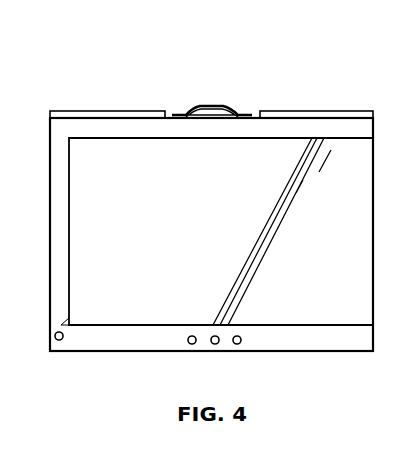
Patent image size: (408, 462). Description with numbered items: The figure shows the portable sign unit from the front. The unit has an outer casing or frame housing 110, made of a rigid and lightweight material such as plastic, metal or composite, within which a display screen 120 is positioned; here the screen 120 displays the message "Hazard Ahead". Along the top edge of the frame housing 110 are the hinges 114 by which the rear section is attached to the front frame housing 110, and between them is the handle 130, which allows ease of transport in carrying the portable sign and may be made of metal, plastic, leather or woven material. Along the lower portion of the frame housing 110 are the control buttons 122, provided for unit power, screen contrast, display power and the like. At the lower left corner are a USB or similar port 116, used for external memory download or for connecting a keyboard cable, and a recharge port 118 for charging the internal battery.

The frame housing 110 is at (80, 130).
The hinges 114 is at (137, 111).
The USB or similar port 116 is at (62, 323).
The recharge port 118 is at (62, 340).
The display screen 120 is at (112, 172).
The control buttons 122 is at (195, 347).
The handle 130 is at (219, 104).